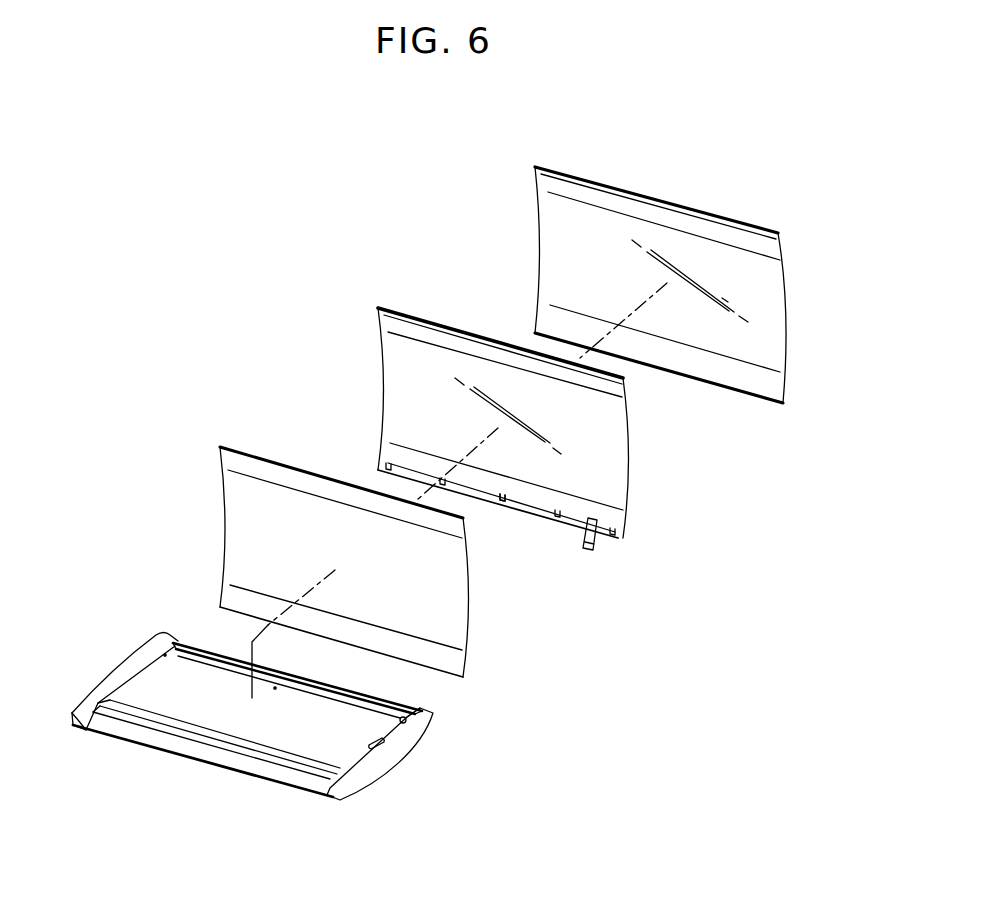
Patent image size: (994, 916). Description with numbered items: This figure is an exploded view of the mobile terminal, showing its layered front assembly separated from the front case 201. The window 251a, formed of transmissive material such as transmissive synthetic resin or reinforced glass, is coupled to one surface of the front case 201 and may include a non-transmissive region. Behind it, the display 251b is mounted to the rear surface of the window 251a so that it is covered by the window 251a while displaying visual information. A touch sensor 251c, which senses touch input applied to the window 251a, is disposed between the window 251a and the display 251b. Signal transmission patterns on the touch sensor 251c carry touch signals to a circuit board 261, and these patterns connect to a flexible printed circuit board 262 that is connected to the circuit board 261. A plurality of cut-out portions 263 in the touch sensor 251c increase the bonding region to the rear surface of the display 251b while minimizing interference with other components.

The front case 201 is at (395, 750).
The window 251a is at (558, 226).
The display 251b is at (230, 530).
The touch sensor 251c is at (392, 372).
The circuit board 261 is at (200, 680).
The flexible printed circuit board 262 is at (598, 540).
The cut-out portions 263 is at (503, 497).